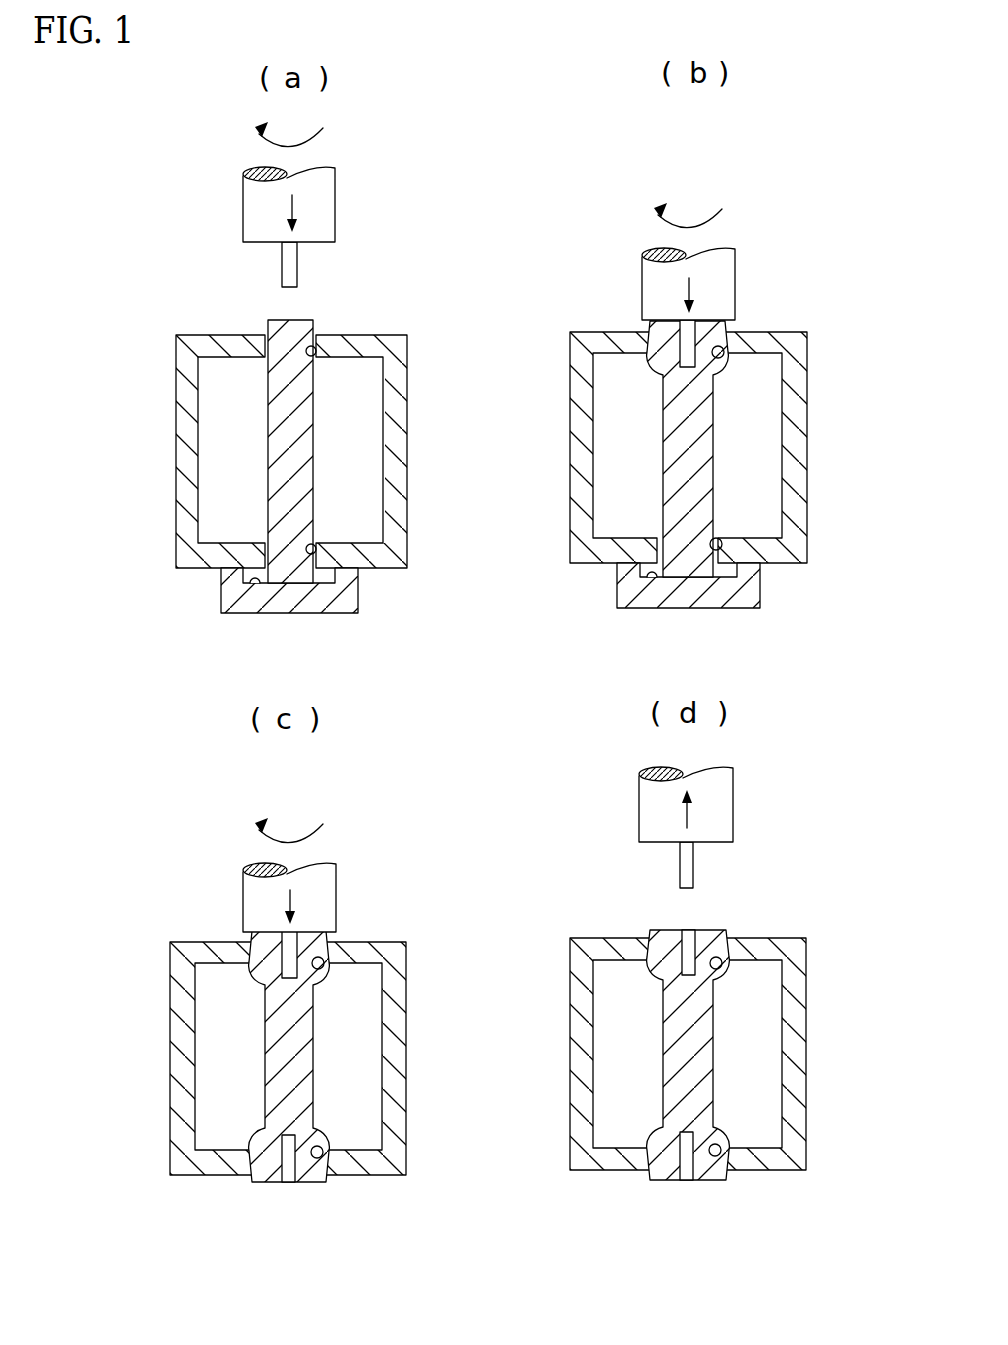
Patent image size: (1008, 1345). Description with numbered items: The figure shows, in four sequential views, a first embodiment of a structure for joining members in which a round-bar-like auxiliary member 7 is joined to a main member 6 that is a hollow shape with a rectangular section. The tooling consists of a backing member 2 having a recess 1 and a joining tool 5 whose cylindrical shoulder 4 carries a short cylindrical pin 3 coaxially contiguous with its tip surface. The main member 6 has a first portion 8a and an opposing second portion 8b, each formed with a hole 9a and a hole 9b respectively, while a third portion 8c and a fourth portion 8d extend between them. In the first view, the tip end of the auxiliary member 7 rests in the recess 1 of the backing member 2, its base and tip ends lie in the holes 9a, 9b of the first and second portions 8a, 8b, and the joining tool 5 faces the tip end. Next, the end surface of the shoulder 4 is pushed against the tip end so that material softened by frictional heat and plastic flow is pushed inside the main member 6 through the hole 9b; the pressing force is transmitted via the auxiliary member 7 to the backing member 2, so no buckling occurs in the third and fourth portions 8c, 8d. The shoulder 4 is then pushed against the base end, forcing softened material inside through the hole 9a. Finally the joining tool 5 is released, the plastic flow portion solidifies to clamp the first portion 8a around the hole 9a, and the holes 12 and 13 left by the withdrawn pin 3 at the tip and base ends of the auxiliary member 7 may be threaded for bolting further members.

The recess 1 is at (248, 583).
The backing member 2 is at (312, 600).
The pin 3 is at (287, 272).
The shoulder 4 is at (255, 202).
The joining tool 5 is at (340, 182).
The main member 6 is at (416, 332).
The auxiliary member 7 is at (280, 478).
The first portion 8a is at (385, 558).
The second portion 8b is at (370, 345).
The third portion 8c is at (397, 437).
The fourth portion 8d is at (187, 437).
The hole 9a is at (312, 545).
The hole 9b is at (312, 358).
The hole 12 is at (290, 1180).
The hole 13 is at (682, 933).